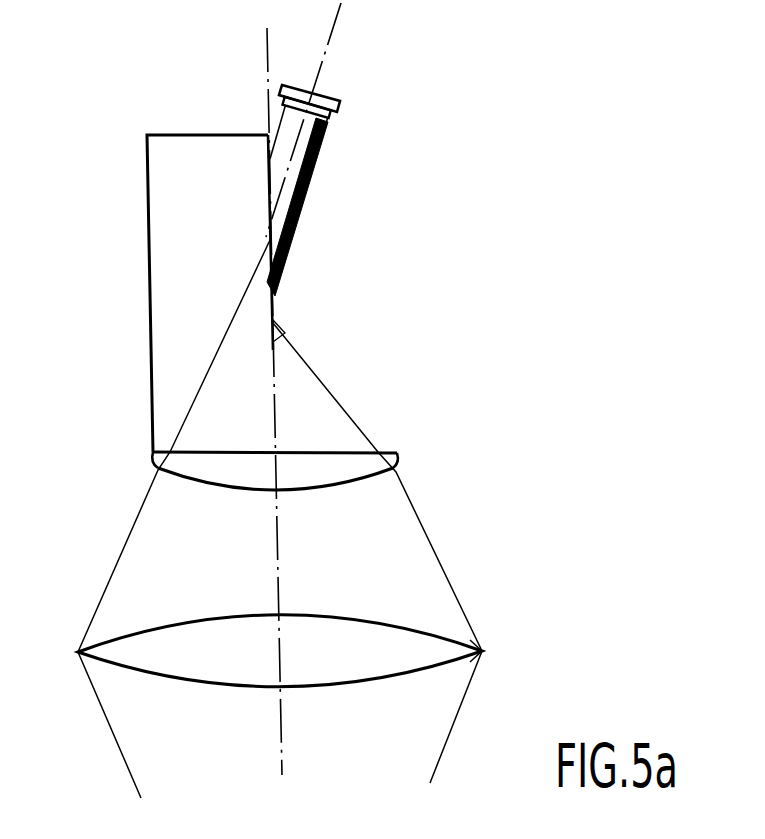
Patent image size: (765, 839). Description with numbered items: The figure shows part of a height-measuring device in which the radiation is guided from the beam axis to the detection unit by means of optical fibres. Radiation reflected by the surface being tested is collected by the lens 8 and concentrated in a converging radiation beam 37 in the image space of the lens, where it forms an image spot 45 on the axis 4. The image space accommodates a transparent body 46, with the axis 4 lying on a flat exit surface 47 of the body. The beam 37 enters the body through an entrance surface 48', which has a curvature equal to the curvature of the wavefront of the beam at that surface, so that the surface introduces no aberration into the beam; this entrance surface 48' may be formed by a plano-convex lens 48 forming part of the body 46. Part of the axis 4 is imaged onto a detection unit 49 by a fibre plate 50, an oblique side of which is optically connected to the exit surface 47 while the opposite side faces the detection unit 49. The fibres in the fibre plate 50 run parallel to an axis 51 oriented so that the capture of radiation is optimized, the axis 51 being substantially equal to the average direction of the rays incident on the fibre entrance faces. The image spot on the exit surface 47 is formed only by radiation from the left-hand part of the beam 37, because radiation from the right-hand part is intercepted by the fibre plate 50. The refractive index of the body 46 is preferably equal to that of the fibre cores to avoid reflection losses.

The axis 4 is at (283, 755).
The axis of the fibres 51 is at (330, 30).
The transparent body 46 is at (147, 186).
The image spot 45 is at (292, 242).
The detection unit 49 is at (342, 107).
The fibre plate 50 is at (312, 173).
The exit surface 47 is at (276, 334).
The plano-convex lens 48 is at (306, 462).
The entrance surface 48' is at (243, 492).
The converging radiation beam 37 is at (118, 563).
The lens 8 is at (488, 652).